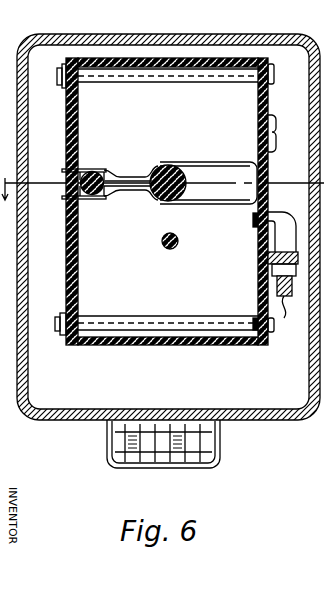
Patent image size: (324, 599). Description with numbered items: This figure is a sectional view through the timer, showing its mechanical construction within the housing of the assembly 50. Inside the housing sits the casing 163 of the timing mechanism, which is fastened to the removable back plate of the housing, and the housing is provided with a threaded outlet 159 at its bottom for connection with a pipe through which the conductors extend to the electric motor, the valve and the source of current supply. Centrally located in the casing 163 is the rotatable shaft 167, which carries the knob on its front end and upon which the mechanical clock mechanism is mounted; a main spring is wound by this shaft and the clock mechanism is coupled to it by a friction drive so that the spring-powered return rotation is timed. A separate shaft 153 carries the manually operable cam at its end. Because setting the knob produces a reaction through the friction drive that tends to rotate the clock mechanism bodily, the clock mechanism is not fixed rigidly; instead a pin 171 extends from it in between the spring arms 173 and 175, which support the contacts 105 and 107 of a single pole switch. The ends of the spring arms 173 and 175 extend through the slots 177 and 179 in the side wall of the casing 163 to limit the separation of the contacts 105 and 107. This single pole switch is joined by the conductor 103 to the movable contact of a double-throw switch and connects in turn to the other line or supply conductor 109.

The housing 50 is at (78, 420).
The conductor 103 is at (272, 135).
The contact 105 is at (122, 179).
The contact 107 is at (122, 190).
The supply conductor 109 is at (270, 312).
The shaft 153 is at (168, 249).
The threaded outlet 159 is at (220, 447).
The casing 163 is at (221, 345).
The rotatable shaft 167 is at (166, 170).
The pin 171 is at (62, 177).
The spring arm 173 is at (86, 170).
The spring arm 175 is at (87, 198).
The slot 177 is at (64, 169).
The slot 179 is at (64, 199).